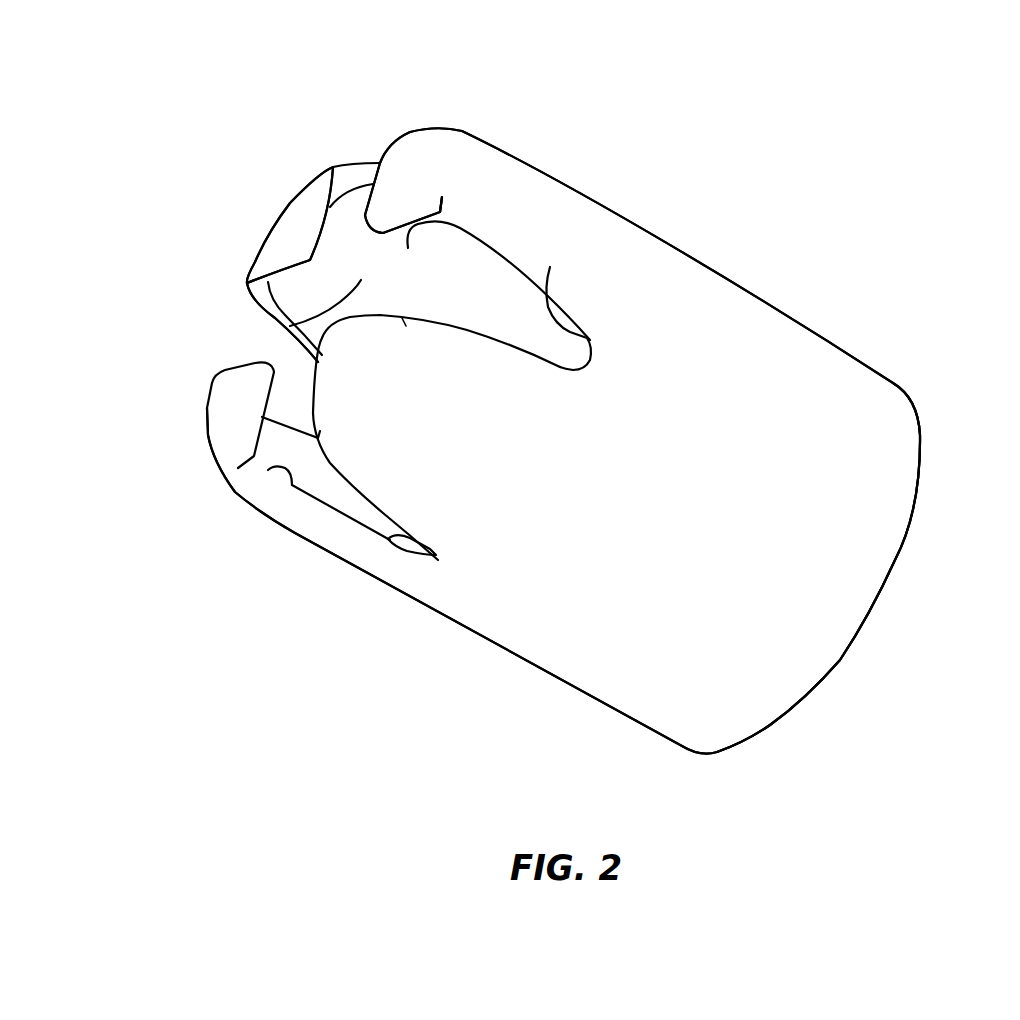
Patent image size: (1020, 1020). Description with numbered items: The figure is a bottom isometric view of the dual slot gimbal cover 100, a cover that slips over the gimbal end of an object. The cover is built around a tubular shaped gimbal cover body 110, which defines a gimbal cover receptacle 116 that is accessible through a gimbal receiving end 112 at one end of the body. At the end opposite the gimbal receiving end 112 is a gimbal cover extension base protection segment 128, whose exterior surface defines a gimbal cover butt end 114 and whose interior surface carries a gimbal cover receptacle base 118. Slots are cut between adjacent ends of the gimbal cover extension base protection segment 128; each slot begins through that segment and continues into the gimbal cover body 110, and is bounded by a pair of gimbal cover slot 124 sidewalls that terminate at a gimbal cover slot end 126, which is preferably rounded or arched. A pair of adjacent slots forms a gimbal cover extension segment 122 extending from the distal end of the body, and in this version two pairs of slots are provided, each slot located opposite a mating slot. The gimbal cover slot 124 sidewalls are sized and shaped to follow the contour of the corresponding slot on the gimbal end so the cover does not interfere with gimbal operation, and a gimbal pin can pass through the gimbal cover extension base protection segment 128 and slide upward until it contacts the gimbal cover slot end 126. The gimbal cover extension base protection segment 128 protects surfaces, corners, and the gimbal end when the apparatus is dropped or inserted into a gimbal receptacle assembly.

The dual slot gimbal cover 100 is at (903, 130).
The gimbal cover body 110 is at (540, 603).
The gimbal receiving end 112 is at (870, 606).
The gimbal cover butt end 114 is at (283, 205).
The gimbal cover receptacle 116 is at (288, 322).
The gimbal cover receptacle base 118 is at (406, 248).
The gimbal cover extension segment 122 is at (528, 176).
The gimbal cover slot 124 is at (358, 173).
The gimbal cover slot end 126 is at (550, 267).
The gimbal cover extension base protection segment 128 is at (272, 222).